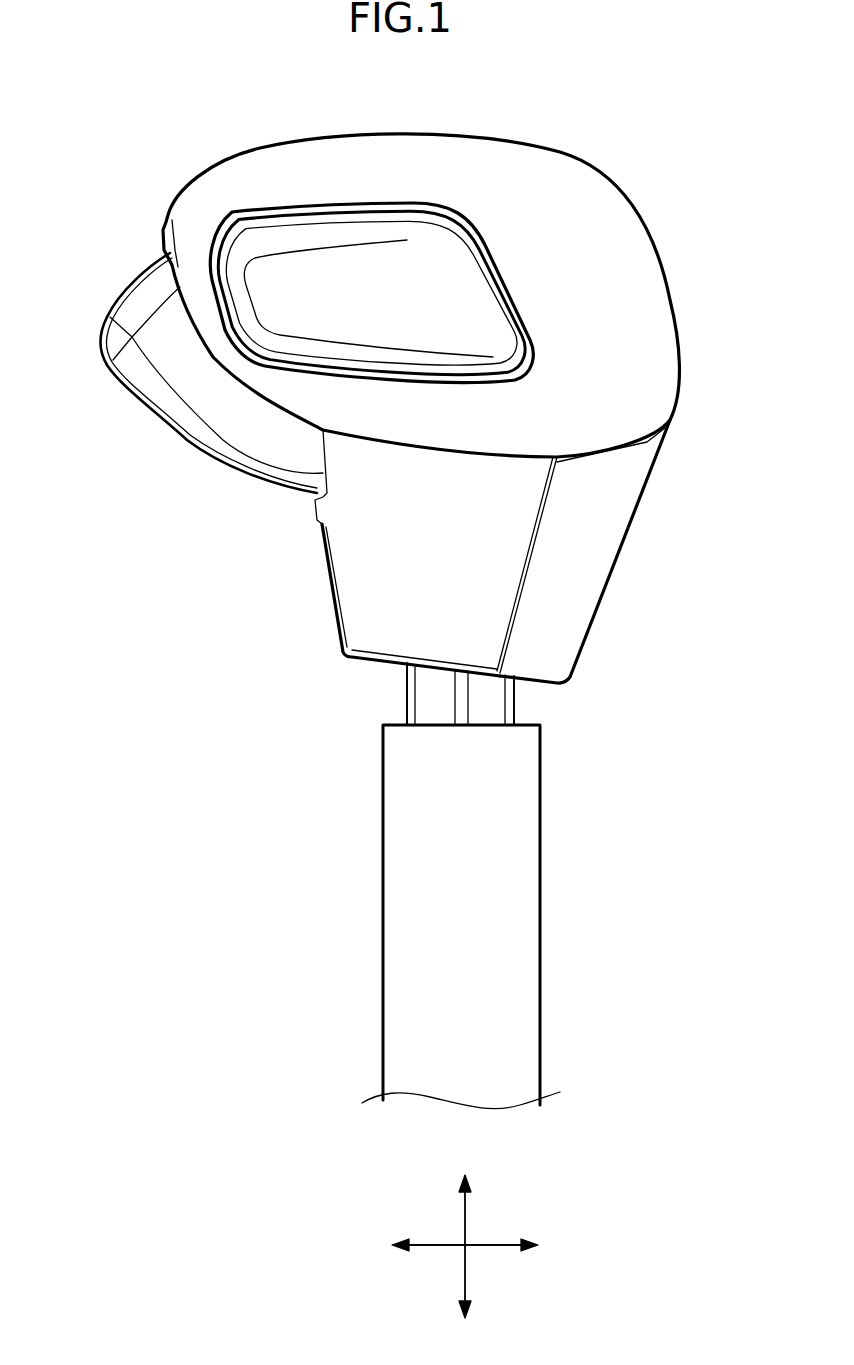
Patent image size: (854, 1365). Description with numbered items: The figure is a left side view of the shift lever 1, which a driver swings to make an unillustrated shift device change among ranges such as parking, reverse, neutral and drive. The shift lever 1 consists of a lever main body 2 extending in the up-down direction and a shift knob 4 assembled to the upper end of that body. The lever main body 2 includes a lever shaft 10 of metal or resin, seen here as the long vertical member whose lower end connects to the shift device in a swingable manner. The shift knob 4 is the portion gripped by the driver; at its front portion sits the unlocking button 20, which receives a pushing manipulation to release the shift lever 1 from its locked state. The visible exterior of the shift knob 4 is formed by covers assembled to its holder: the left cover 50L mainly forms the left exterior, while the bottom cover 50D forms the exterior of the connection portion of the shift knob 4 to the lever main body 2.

The shift lever 1 is at (690, 614).
The lever main body 2 is at (550, 853).
The shift knob 4 is at (600, 546).
The lever shaft 10 is at (498, 938).
The unlocking button 20 is at (222, 427).
The left cover 50L is at (371, 162).
The bottom cover 50D is at (367, 592).